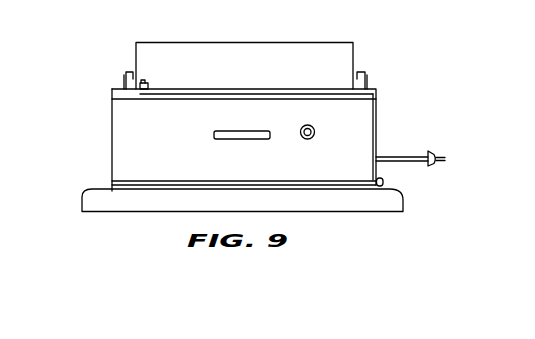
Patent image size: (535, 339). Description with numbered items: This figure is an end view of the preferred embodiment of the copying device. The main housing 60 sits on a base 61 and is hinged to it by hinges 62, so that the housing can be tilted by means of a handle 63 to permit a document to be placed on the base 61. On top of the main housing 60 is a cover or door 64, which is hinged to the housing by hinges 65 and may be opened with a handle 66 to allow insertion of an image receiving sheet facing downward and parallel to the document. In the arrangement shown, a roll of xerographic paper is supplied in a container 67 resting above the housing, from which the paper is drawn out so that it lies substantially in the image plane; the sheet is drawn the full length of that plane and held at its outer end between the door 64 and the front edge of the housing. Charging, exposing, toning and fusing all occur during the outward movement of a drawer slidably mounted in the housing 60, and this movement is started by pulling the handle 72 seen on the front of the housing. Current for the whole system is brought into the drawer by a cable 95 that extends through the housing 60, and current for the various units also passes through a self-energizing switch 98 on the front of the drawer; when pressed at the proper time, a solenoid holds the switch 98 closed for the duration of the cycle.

The main housing 60 is at (111, 185).
The base 61 is at (82, 201).
The hinges 62 is at (384, 180).
The handle 63 is at (125, 73).
The cover or door 64 is at (243, 90).
The hinges 65 is at (147, 82).
The handle 66 is at (366, 72).
The container 67 is at (268, 48).
The handle 72 is at (246, 140).
The cable 95 is at (393, 156).
The self-energizing switch 98 is at (305, 139).